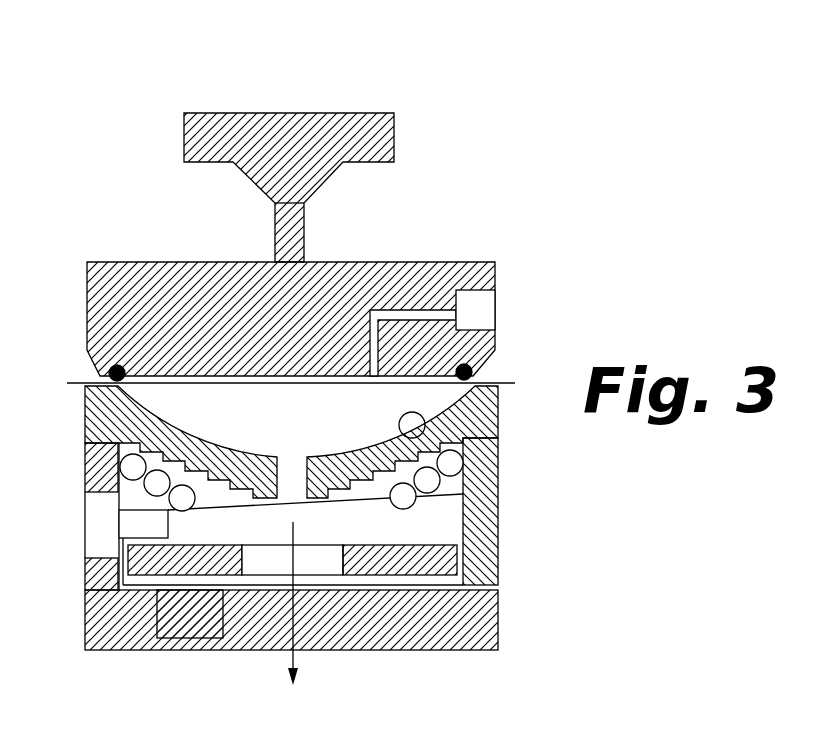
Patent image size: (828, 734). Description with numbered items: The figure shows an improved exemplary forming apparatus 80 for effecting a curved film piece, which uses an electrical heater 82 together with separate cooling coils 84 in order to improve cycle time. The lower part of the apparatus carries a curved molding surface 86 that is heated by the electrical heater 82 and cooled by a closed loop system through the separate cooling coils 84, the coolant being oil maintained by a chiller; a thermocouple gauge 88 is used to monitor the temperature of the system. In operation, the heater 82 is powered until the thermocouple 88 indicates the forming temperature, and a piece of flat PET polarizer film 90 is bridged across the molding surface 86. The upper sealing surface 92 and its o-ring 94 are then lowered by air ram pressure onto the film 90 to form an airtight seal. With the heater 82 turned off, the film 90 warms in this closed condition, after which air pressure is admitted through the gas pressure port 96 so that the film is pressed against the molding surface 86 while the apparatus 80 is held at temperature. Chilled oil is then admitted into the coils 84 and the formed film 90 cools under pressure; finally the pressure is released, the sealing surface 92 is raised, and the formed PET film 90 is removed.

The forming apparatus 80 is at (141, 83).
The electrical heater 82 is at (448, 557).
The cooling coils 84 is at (452, 468).
The molding surface 86 is at (445, 430).
The thermocouple gauge 88 is at (160, 537).
The PET polarizer film 90 is at (68, 383).
The sealing surface 92 is at (325, 288).
The o-ring 94 is at (114, 368).
The gas pressure port 96 is at (480, 333).